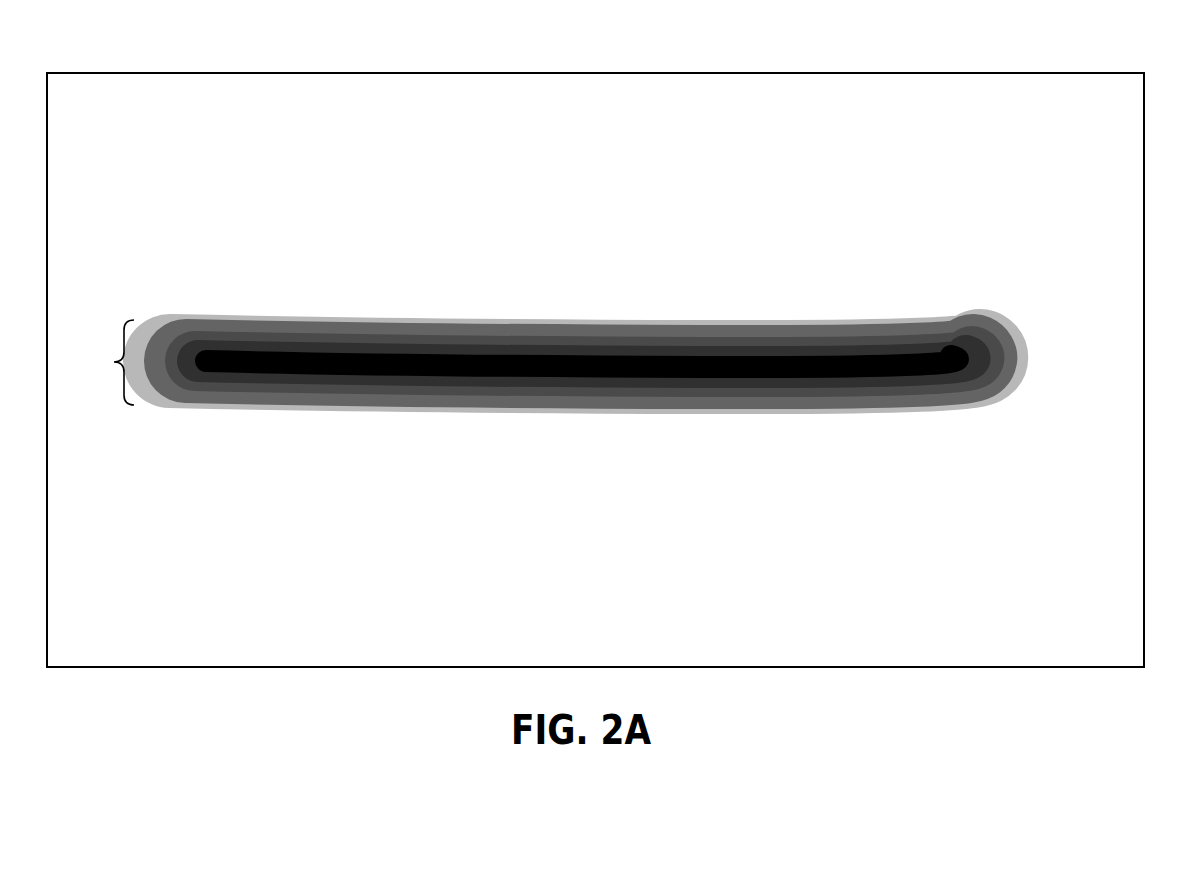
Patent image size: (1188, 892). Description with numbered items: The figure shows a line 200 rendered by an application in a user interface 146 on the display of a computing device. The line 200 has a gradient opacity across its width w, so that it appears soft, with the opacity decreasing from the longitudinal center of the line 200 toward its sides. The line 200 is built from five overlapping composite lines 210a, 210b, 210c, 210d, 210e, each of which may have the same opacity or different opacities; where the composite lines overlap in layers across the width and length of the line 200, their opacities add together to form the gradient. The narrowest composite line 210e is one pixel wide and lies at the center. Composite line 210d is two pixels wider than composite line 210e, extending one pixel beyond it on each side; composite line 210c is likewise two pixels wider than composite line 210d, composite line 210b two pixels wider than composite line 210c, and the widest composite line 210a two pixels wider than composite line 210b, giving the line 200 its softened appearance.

The user interface 146 is at (143, 73).
The line 200 is at (640, 349).
The composite line 210a is at (997, 320).
The composite line 210b is at (1003, 338).
The composite line 210c is at (995, 357).
The composite line 210d is at (977, 360).
The composite line 210e is at (957, 365).
The width w is at (110, 362).